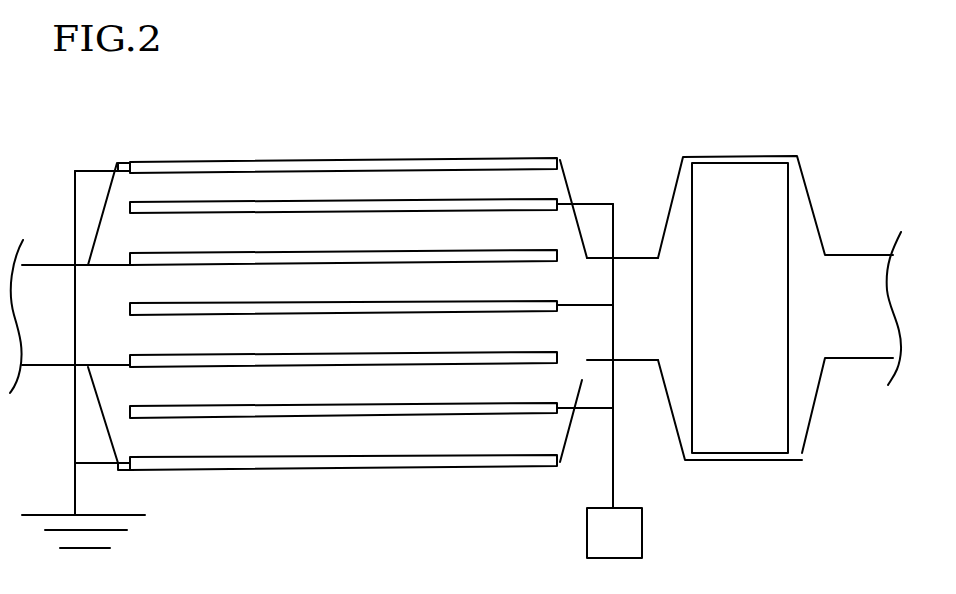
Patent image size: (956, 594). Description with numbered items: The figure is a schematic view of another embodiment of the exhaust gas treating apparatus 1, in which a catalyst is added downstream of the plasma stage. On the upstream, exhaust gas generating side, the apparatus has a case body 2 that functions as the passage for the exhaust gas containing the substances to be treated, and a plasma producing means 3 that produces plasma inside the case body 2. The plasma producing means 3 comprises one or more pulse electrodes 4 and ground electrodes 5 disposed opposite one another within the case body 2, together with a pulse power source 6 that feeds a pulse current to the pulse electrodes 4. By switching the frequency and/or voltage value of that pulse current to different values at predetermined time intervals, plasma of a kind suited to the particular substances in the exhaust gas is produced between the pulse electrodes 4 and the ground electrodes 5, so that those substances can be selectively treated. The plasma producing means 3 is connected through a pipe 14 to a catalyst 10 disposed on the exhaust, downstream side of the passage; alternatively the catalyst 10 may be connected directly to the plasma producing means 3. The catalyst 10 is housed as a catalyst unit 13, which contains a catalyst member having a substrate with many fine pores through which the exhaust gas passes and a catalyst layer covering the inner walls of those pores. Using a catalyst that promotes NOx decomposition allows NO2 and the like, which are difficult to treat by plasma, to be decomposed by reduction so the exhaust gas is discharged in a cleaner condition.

The exhaust gas treating apparatus 1 is at (317, 312).
The case body 2 is at (560, 160).
The plasma producing means 3 is at (607, 381).
The pulse electrode 4 is at (408, 202).
The ground electrode 5 is at (283, 162).
The pulse power source 6 is at (612, 537).
The catalyst 10 is at (719, 197).
The catalyst unit 13 is at (802, 460).
The pipe 14 is at (631, 257).